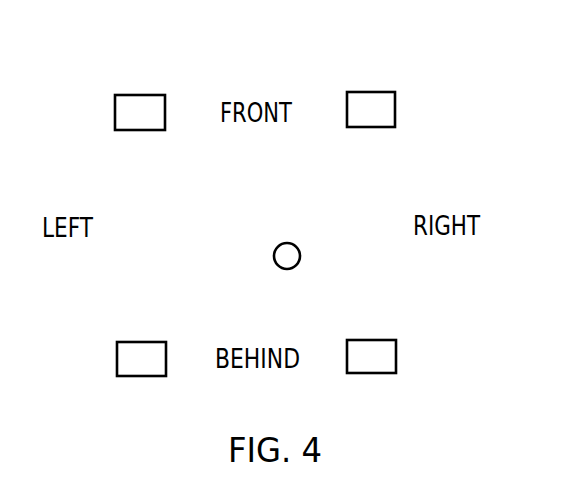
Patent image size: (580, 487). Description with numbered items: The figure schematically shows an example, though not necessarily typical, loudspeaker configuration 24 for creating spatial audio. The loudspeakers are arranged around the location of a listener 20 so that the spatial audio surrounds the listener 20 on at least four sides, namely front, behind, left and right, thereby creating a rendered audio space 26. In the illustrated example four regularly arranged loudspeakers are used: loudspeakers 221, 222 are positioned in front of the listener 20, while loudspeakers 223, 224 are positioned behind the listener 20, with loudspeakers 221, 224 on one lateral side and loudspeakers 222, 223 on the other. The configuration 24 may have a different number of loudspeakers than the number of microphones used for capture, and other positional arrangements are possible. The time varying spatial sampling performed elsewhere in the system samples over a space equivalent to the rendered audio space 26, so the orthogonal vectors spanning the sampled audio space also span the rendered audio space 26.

The listener 20 is at (300, 253).
The loudspeaker 221 is at (140, 94).
The loudspeaker 222 is at (370, 91).
The loudspeaker 223 is at (370, 339).
The loudspeaker 224 is at (140, 341).
The loudspeaker configuration 24 is at (522, 170).
The rendered audio space 26 is at (283, 191).